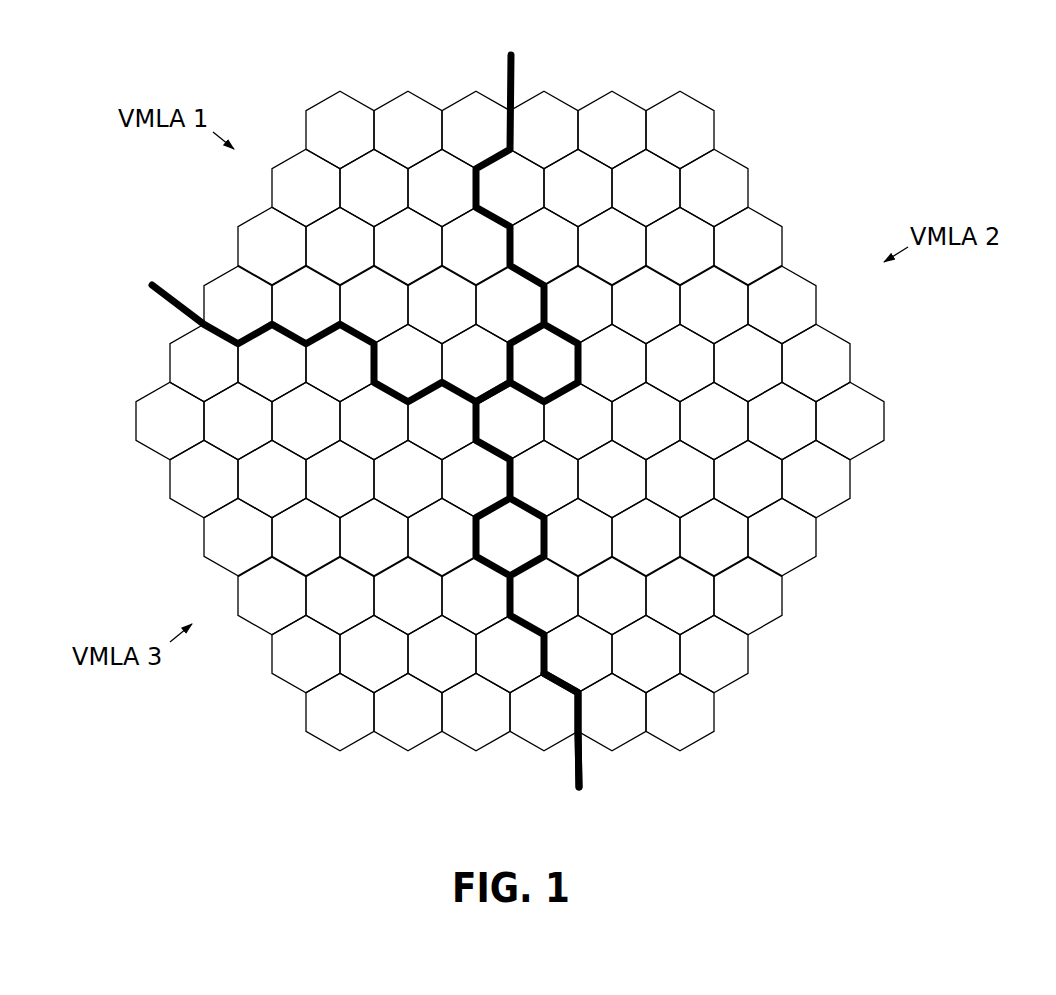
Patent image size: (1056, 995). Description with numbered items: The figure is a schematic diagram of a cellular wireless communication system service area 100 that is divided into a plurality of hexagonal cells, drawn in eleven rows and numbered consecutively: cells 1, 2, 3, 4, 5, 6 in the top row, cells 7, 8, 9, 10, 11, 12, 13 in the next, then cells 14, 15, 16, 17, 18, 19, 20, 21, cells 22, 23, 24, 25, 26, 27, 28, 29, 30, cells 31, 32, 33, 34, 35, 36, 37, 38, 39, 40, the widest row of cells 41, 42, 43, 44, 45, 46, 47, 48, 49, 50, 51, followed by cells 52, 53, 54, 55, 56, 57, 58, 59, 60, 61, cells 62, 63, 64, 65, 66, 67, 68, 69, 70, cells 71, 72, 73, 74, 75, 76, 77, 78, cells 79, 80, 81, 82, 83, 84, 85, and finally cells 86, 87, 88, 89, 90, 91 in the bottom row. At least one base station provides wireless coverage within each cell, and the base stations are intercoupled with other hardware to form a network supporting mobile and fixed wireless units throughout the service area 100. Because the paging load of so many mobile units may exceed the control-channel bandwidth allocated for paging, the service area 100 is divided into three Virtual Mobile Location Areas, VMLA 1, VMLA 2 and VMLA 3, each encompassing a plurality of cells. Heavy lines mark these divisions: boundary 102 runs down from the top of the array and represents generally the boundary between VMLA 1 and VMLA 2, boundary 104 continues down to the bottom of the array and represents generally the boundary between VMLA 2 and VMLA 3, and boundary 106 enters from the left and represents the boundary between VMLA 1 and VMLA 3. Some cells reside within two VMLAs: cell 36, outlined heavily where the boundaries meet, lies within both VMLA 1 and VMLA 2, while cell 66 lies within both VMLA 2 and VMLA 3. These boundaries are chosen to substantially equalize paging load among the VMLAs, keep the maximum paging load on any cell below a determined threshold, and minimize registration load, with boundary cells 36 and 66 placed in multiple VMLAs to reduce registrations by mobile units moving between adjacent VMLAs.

The cell 1 is at (340, 130).
The cell 2 is at (408, 130).
The cell 3 is at (476, 130).
The cell 4 is at (544, 130).
The cell 5 is at (612, 130).
The cell 6 is at (680, 130).
The cell 7 is at (306, 188).
The cell 8 is at (374, 188).
The cell 9 is at (442, 188).
The cell 10 is at (510, 188).
The cell 11 is at (578, 188).
The cell 12 is at (646, 188).
The cell 13 is at (714, 188).
The cell 14 is at (272, 246).
The cell 15 is at (340, 246).
The cell 16 is at (408, 246).
The cell 17 is at (476, 246).
The cell 18 is at (544, 246).
The cell 19 is at (612, 246).
The cell 20 is at (680, 246).
The cell 21 is at (748, 246).
The cell 22 is at (238, 305).
The cell 23 is at (306, 305).
The cell 24 is at (374, 305).
The cell 25 is at (442, 305).
The cell 26 is at (510, 305).
The cell 27 is at (578, 305).
The cell 28 is at (646, 305).
The cell 29 is at (714, 305).
The cell 30 is at (782, 305).
The cell 31 is at (204, 363).
The cell 32 is at (272, 363).
The cell 33 is at (340, 363).
The cell 34 is at (408, 363).
The cell 35 is at (476, 363).
The boundary cell 36 is at (544, 363).
The cell 37 is at (612, 363).
The cell 38 is at (680, 363).
The cell 39 is at (748, 363).
The cell 40 is at (816, 363).
The cell 41 is at (170, 421).
The cell 42 is at (238, 421).
The cell 43 is at (306, 421).
The cell 44 is at (374, 421).
The cell 45 is at (442, 421).
The cell 46 is at (510, 421).
The cell 47 is at (578, 421).
The cell 48 is at (646, 421).
The cell 49 is at (714, 421).
The cell 50 is at (782, 421).
The cell 51 is at (850, 421).
The cell 52 is at (204, 479).
The cell 53 is at (272, 479).
The cell 54 is at (340, 479).
The cell 55 is at (408, 479).
The cell 56 is at (476, 479).
The cell 57 is at (544, 479).
The cell 58 is at (612, 479).
The cell 59 is at (680, 479).
The cell 60 is at (748, 479).
The cell 61 is at (816, 479).
The cell 62 is at (238, 537).
The cell 63 is at (306, 537).
The cell 64 is at (374, 537).
The cell 65 is at (442, 537).
The boundary cell 66 is at (510, 537).
The cell 67 is at (578, 537).
The cell 68 is at (646, 537).
The cell 69 is at (714, 537).
The cell 70 is at (782, 537).
The cell 71 is at (272, 596).
The cell 72 is at (340, 596).
The cell 73 is at (408, 596).
The cell 74 is at (476, 596).
The cell 75 is at (544, 596).
The cell 76 is at (612, 596).
The cell 77 is at (680, 596).
The cell 78 is at (748, 596).
The cell 79 is at (306, 654).
The cell 80 is at (374, 654).
The cell 81 is at (442, 654).
The cell 82 is at (510, 654).
The cell 83 is at (578, 654).
The cell 84 is at (646, 654).
The cell 85 is at (714, 654).
The cell 86 is at (340, 712).
The cell 87 is at (408, 712).
The cell 88 is at (476, 712).
The cell 89 is at (544, 712).
The cell 90 is at (612, 712).
The cell 91 is at (680, 712).
The service area 100 is at (799, 857).
The boundary 102 is at (513, 58).
The boundary 104 is at (579, 778).
The boundary 106 is at (152, 288).